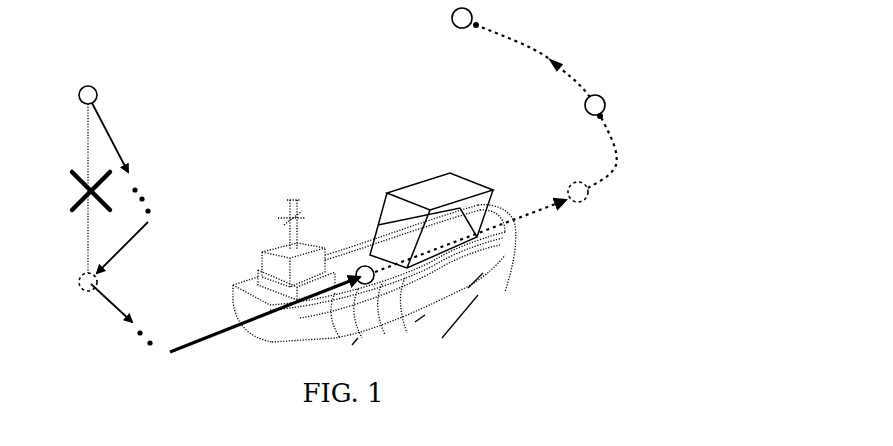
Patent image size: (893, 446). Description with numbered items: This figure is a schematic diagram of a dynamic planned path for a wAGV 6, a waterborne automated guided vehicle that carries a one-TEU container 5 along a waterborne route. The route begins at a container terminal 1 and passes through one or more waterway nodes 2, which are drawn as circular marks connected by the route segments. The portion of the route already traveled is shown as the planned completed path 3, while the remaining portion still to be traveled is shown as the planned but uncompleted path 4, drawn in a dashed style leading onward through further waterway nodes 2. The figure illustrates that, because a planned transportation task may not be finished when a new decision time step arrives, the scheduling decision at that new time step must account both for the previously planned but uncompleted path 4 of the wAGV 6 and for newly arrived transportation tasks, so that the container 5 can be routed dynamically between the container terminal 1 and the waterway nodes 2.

The container terminal 1 is at (111, 179).
The waterway node 2 is at (123, 284).
The planned completed path 3 is at (272, 309).
The planned but uncompleted path 4 is at (496, 140).
The 1 TEU container 5 is at (431, 220).
The wAGV 6 is at (293, 223).